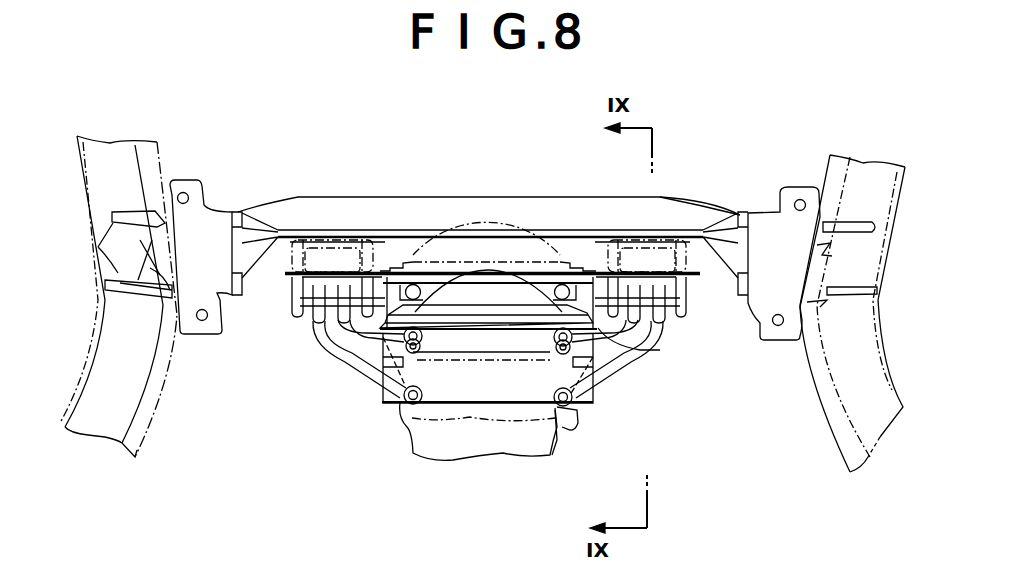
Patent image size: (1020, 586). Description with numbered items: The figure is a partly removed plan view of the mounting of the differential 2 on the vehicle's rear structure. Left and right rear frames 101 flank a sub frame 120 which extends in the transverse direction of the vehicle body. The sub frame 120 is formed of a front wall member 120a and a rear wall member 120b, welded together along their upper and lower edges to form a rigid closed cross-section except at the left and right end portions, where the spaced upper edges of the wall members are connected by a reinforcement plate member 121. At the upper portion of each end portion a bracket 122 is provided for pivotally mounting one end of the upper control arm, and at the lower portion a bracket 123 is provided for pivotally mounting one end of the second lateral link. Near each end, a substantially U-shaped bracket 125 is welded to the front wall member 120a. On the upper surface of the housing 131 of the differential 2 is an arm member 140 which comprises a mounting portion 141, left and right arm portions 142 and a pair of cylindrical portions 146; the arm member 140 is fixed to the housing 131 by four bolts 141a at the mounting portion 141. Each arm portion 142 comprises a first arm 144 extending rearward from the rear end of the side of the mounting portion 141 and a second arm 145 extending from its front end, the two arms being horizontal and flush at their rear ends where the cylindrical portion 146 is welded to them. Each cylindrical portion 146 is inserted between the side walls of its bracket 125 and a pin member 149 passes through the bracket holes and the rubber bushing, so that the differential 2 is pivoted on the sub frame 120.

The differential 2 is at (407, 437).
The rear frame 101 is at (92, 350).
The sub frame 120 is at (573, 125).
The front wall member 120a is at (400, 252).
The rear wall member 120b is at (577, 235).
The reinforcement plate member 121 is at (228, 300).
The bracket 122 is at (97, 247).
The bracket 123 is at (170, 309).
The bracket 125 is at (292, 300).
The housing 131 is at (575, 422).
The arm member 140 is at (357, 385).
The mounting portion 141 is at (477, 390).
The bolt 141a is at (558, 433).
The arm portion 142 is at (694, 378).
The first arm 144 is at (612, 352).
The second arm 145 is at (617, 385).
The cylindrical portion 146 is at (663, 323).
The pin member 149 is at (688, 227).